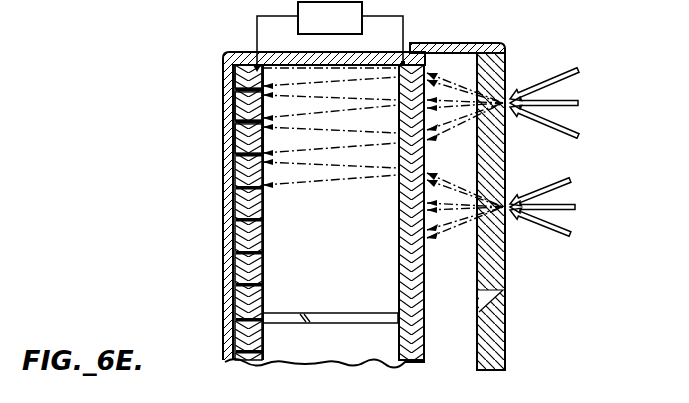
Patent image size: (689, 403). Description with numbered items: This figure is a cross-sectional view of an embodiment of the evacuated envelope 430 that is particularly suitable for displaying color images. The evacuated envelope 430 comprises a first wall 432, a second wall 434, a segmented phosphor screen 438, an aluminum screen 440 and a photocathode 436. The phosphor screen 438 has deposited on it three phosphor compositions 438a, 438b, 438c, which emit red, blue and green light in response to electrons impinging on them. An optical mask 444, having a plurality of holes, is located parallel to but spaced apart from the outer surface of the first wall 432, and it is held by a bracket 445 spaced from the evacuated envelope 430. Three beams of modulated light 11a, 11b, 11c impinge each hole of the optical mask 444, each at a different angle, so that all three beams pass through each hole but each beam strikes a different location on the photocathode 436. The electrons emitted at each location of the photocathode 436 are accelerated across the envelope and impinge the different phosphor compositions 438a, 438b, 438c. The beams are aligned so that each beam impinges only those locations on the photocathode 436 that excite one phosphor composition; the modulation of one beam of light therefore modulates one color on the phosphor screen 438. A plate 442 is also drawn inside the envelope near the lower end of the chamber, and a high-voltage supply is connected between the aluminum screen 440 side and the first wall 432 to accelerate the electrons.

The evacuated envelope 430 is at (178, 262).
The second wall 434 is at (226, 343).
The segmented phosphor screen 438 is at (245, 363).
The phosphor composition 438a is at (240, 72).
The phosphor composition 438b is at (240, 105).
The phosphor composition 438c is at (240, 138).
The aluminum screen 440 is at (258, 363).
The collector plate 442 is at (332, 314).
The first wall 432 is at (425, 362).
The photocathode 436 is at (406, 363).
The optical mask 444 is at (505, 331).
The bracket 445 is at (458, 46).
The beam of modulated light 11a is at (572, 135).
The beam of modulated light 11b is at (578, 103).
The beam of modulated light 11c is at (571, 73).